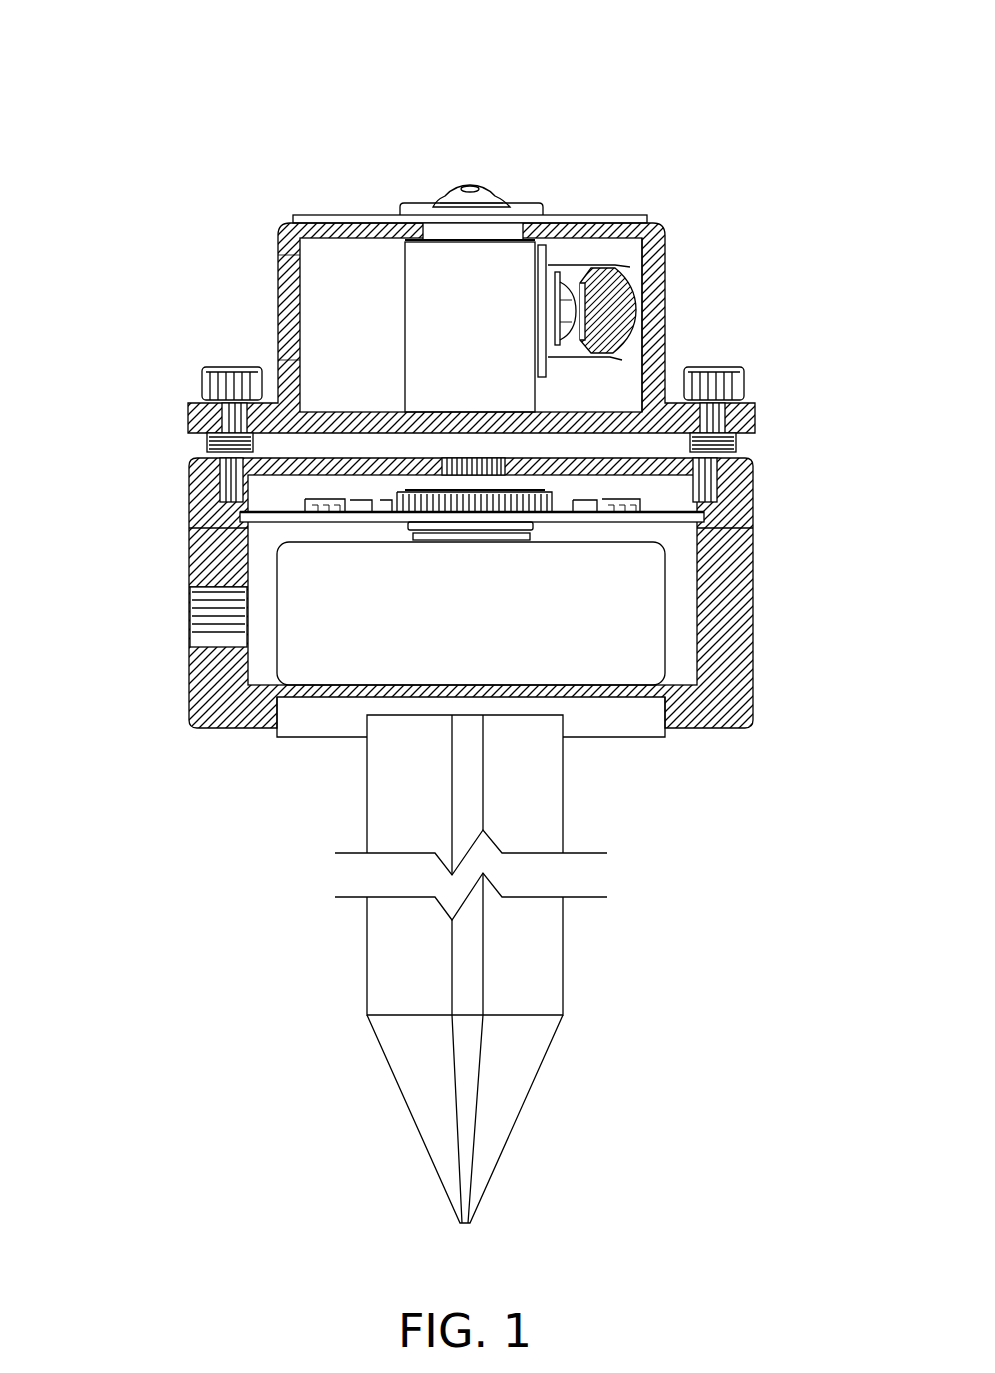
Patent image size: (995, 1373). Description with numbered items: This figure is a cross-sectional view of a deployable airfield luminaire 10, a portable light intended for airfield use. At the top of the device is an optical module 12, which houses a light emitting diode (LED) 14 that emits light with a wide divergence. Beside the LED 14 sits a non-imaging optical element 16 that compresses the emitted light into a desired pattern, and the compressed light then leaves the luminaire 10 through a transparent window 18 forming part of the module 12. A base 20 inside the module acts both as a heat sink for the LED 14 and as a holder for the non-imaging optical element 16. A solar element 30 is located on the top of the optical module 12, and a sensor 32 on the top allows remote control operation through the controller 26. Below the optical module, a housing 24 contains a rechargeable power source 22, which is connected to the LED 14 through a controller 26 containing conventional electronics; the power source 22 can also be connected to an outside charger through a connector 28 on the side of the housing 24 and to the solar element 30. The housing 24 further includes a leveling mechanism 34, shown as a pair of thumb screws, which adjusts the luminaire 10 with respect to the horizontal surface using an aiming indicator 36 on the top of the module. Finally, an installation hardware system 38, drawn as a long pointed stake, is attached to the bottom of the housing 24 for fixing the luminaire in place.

The deployable airfield luminaire 10 is at (672, 70).
The optical module 12 is at (283, 244).
The light emitting diode (LED) 14 is at (567, 296).
The non-imaging optical element 16 is at (626, 330).
The transparent window 18 is at (660, 288).
The base 20 is at (420, 290).
The rechargeable power source 22 is at (356, 667).
The housing 24 is at (740, 620).
The controller 26 is at (537, 512).
The connector 28 is at (188, 612).
The solar element 30 is at (295, 216).
The sensor 32 is at (400, 207).
The leveling mechanism 34 is at (205, 387).
The aiming indicator 36 is at (470, 187).
The installation hardware system 38 is at (548, 940).